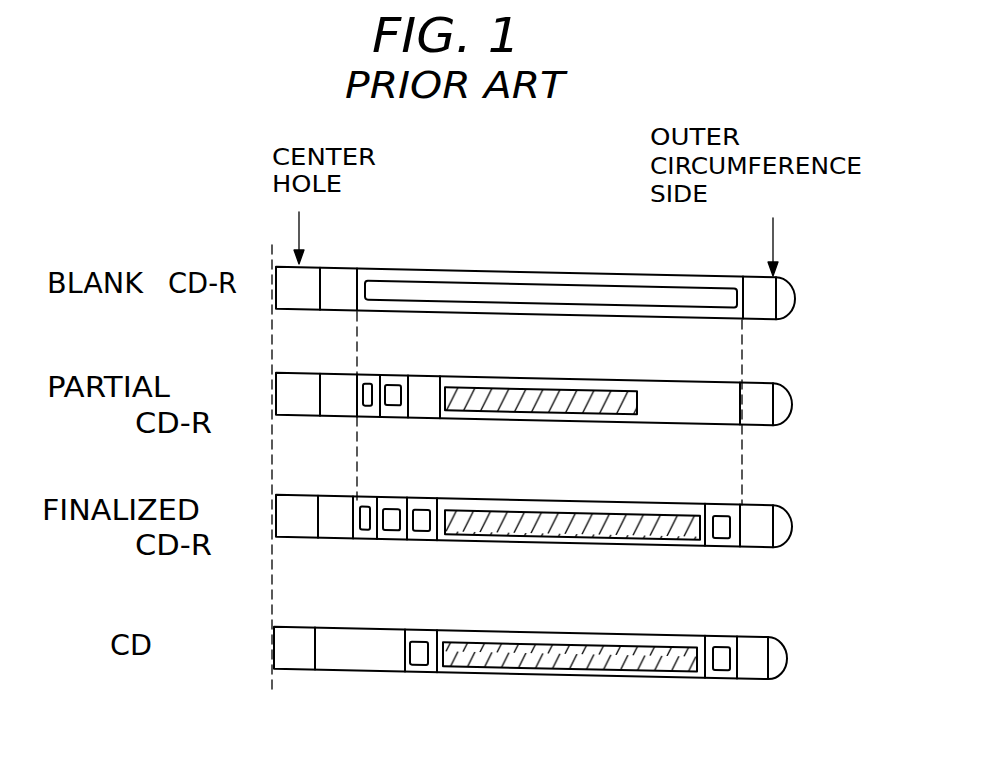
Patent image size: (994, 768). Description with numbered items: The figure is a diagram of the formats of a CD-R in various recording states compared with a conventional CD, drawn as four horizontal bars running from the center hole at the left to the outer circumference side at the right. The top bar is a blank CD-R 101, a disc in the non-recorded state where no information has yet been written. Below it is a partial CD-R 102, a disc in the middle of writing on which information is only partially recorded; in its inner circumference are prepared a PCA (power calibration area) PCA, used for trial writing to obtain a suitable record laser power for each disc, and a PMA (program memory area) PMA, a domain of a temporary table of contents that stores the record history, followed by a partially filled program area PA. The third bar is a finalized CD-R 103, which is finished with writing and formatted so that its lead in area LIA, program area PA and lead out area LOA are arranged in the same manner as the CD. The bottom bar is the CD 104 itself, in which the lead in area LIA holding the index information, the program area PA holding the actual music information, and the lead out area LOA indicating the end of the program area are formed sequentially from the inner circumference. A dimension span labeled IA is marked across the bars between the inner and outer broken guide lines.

The blank CD-R 101 is at (789, 321).
The partial CD-R 102 is at (789, 430).
The finalized CD-R 103 is at (789, 550).
The CD 104 is at (779, 684).
The power calibration area PCA is at (368, 407).
The program memory area PMA is at (398, 503).
The program area PA is at (548, 412).
The lead in area LIA is at (437, 543).
The lead out area LOA is at (737, 549).
The information area IA is at (740, 333).